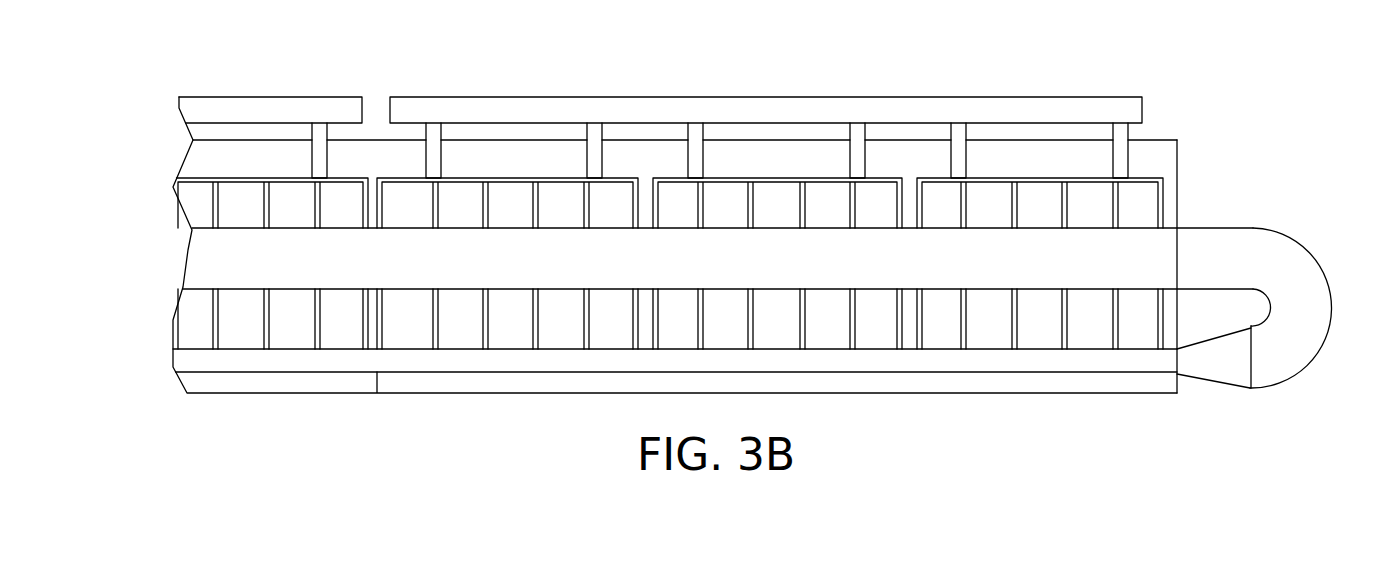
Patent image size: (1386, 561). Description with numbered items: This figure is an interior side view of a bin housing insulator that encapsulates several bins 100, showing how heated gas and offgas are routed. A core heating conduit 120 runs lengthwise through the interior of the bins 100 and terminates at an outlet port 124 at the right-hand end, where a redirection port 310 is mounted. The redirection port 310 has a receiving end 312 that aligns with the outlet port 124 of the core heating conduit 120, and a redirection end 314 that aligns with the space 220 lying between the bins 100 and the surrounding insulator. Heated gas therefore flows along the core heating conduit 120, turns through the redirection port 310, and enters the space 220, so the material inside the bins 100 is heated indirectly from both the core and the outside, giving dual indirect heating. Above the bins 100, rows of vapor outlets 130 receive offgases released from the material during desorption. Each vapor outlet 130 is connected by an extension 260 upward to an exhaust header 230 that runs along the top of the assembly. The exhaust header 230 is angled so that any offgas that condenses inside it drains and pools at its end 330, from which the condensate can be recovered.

The bin 100 is at (513, 362).
The core heating conduit 120 is at (247, 250).
The outlet port 124 is at (1170, 240).
The vapor outlet 130 is at (798, 203).
The space 220 is at (955, 361).
The exhaust header 230 is at (660, 86).
The extension 260 is at (957, 132).
The redirection port 310 is at (1233, 310).
The receiving end 312 is at (1177, 253).
The redirection end 314 is at (1175, 360).
The end 330 is at (412, 110).